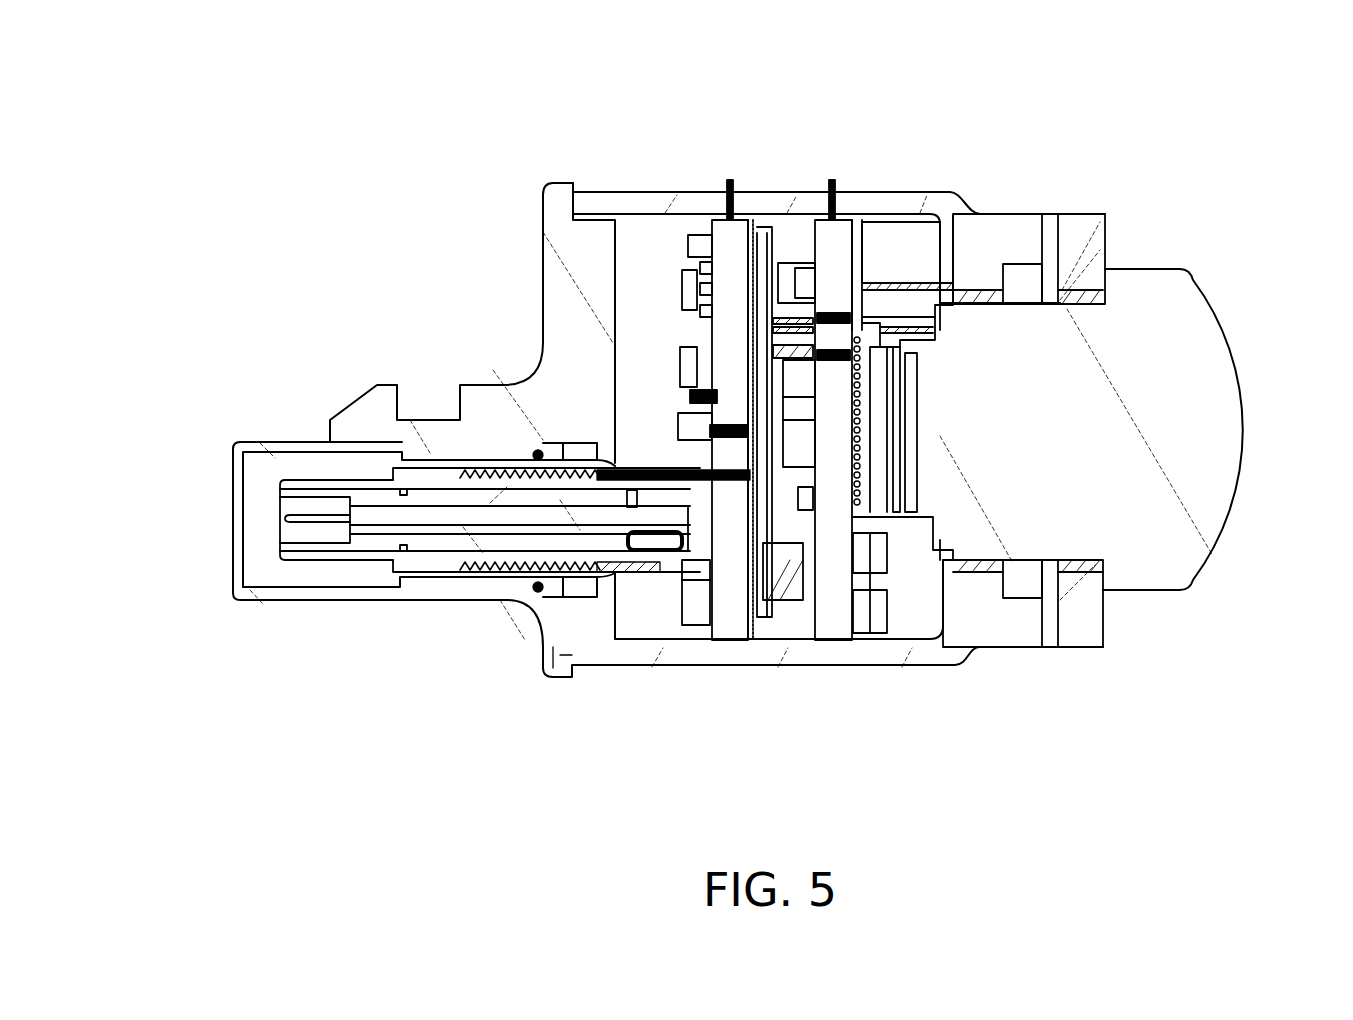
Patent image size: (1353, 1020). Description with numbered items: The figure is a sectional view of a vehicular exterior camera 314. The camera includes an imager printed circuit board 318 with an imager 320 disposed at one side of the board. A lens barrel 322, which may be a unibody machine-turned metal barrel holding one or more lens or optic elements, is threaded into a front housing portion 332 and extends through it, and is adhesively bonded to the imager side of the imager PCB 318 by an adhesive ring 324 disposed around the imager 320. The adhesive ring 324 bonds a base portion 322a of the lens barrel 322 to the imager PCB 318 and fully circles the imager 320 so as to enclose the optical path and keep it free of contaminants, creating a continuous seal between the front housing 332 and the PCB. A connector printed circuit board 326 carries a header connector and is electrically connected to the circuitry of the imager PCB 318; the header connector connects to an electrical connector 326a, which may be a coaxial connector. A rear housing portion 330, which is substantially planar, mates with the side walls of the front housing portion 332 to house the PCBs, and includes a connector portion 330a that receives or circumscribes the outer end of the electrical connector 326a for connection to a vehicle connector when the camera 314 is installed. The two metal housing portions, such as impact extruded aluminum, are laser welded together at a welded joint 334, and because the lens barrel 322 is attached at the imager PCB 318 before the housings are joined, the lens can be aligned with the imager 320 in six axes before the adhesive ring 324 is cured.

The vehicular exterior camera 314 is at (1172, 164).
The imager printed circuit board 318 is at (832, 237).
The imager 320 is at (890, 432).
The lens barrel 322 is at (1032, 555).
The base portion of the lens barrel 322a is at (913, 517).
The adhesive ring 324 is at (880, 328).
The connector printed circuit board 326 is at (722, 240).
The electrical connector 326a is at (342, 552).
The rear housing portion 330 is at (560, 227).
The connector portion 330a is at (243, 444).
The front housing portion 332 is at (960, 663).
The welded joint 334 is at (577, 667).